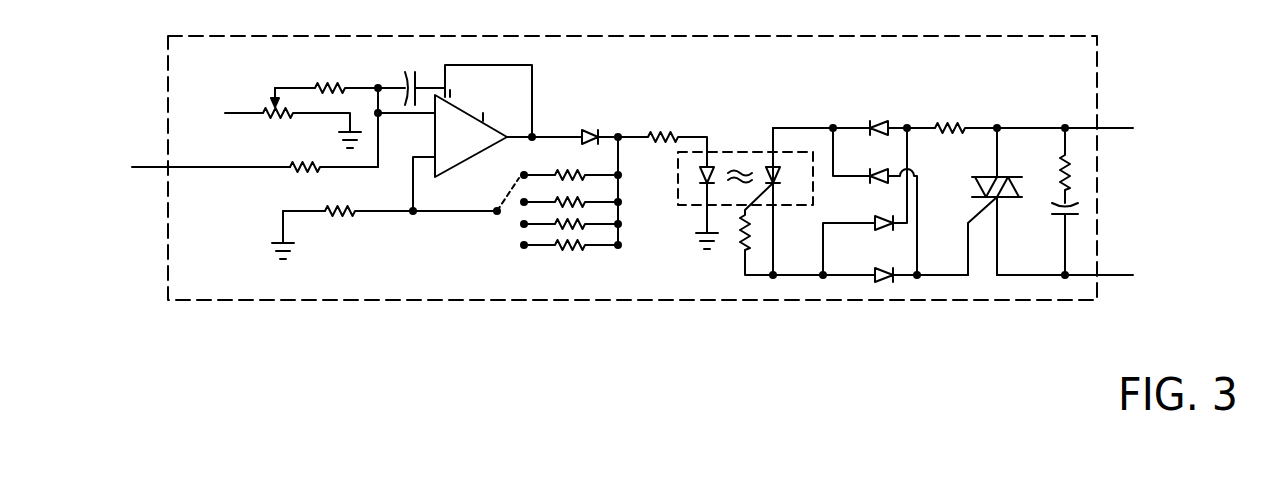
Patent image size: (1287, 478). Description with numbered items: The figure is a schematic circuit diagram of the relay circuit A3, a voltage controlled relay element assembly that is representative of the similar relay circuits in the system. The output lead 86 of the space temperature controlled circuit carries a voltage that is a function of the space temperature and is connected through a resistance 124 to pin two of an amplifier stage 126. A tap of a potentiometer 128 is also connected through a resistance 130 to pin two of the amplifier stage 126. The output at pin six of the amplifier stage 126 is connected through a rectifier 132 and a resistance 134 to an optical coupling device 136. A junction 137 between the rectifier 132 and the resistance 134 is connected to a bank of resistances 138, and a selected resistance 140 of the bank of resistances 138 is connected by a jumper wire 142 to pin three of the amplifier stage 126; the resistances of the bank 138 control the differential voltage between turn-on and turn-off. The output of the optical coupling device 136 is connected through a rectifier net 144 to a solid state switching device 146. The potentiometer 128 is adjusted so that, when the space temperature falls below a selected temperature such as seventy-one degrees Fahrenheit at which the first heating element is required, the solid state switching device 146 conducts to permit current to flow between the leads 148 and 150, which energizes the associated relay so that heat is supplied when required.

The relay circuit A3 is at (582, 300).
The output lead 86 is at (160, 168).
The resistance 124 is at (306, 162).
The amplifier stage 126 is at (457, 165).
The potentiometer 128 is at (288, 120).
The resistance 130 is at (347, 84).
The rectifier 132 is at (577, 143).
The resistance 134 is at (672, 143).
The optical coupling device 136 is at (680, 206).
The junction 137 is at (620, 136).
The bank of resistances 138 is at (661, 216).
The selected resistance 140 is at (563, 172).
The jumper wire 142 is at (502, 192).
The rectifier net 144 is at (953, 170).
The solid state switching device 146 is at (1000, 200).
The lead 148 is at (1108, 276).
The lead 150 is at (1112, 128).